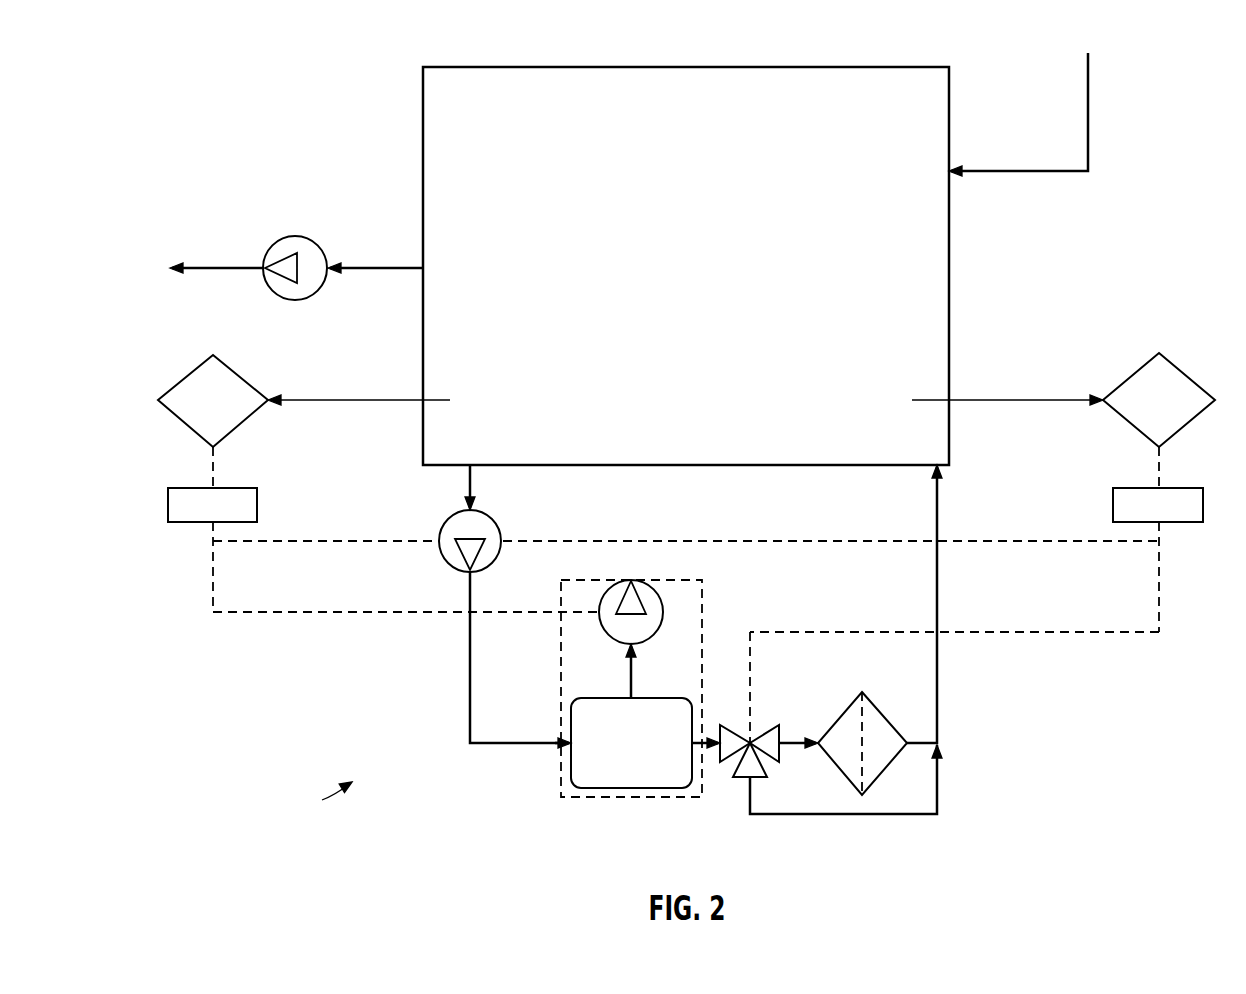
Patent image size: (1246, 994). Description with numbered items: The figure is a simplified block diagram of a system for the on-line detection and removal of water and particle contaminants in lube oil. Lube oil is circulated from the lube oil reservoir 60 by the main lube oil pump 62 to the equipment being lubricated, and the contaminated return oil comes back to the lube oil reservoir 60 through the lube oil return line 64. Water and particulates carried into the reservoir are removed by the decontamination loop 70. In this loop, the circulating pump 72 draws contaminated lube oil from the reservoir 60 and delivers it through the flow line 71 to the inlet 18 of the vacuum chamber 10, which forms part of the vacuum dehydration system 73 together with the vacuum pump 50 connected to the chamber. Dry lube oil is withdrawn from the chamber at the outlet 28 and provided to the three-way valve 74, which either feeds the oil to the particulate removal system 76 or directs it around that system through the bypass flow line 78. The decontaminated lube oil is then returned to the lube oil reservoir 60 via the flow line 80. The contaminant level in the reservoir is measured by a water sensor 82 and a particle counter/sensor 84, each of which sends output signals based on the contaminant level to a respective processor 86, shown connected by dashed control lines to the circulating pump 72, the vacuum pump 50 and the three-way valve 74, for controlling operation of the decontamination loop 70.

The vacuum chamber 10 is at (618, 759).
The inlet 18 is at (558, 750).
The outlet 28 is at (700, 748).
The vacuum pump 50 is at (663, 612).
The lube oil reservoir 60 is at (672, 283).
The main lube oil pump 62 is at (292, 300).
The lube oil return line 64 is at (1049, 172).
The decontamination loop 70 is at (320, 801).
The flow line 71 is at (476, 748).
The circulating pump 72 is at (487, 517).
The vacuum dehydration system 73 is at (635, 797).
The three-way valve 74 is at (775, 765).
The particulate removal system 76 is at (878, 722).
The flow line 78 is at (842, 814).
The flow line 80 is at (937, 680).
The water sensor 82 is at (200, 416).
The particle counter/sensor 84 is at (1146, 416).
The processor 86 is at (200, 518).